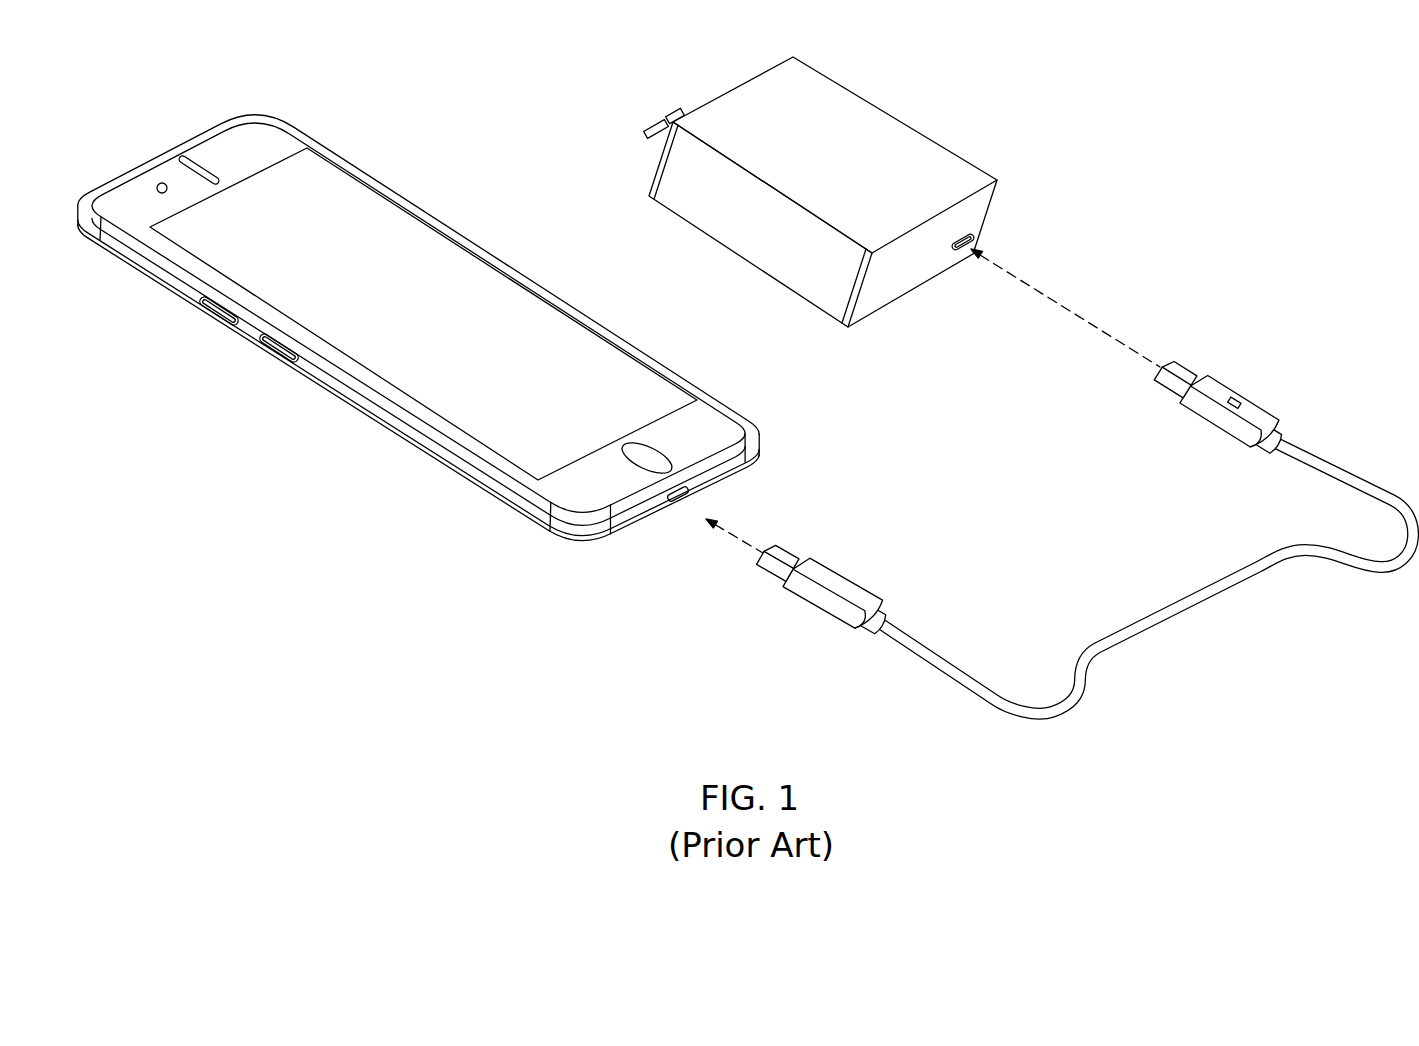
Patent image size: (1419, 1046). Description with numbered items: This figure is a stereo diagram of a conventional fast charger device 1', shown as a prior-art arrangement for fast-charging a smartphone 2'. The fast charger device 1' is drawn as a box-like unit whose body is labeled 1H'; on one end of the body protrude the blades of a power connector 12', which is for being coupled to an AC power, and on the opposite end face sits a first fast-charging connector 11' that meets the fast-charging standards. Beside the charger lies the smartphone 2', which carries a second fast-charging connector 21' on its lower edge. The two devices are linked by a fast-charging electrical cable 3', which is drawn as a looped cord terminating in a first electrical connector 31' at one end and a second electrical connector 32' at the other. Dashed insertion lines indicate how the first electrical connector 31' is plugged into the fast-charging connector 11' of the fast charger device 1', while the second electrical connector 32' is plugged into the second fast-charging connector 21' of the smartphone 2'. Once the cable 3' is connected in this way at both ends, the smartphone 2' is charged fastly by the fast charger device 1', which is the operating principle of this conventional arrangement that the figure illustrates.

The smartphone 2' is at (418, 338).
The second fast-charging connector 21' is at (693, 546).
The fast charger device 1' is at (796, 192).
The housing of power adapter 1H' is at (823, 192).
The power connector 12' is at (599, 128).
The first fast-charging connector 11' is at (1015, 225).
The fast-charging electrical cable 3' is at (1145, 578).
The first electrical connector 31' is at (1220, 370).
The second electrical connector 32' is at (840, 560).